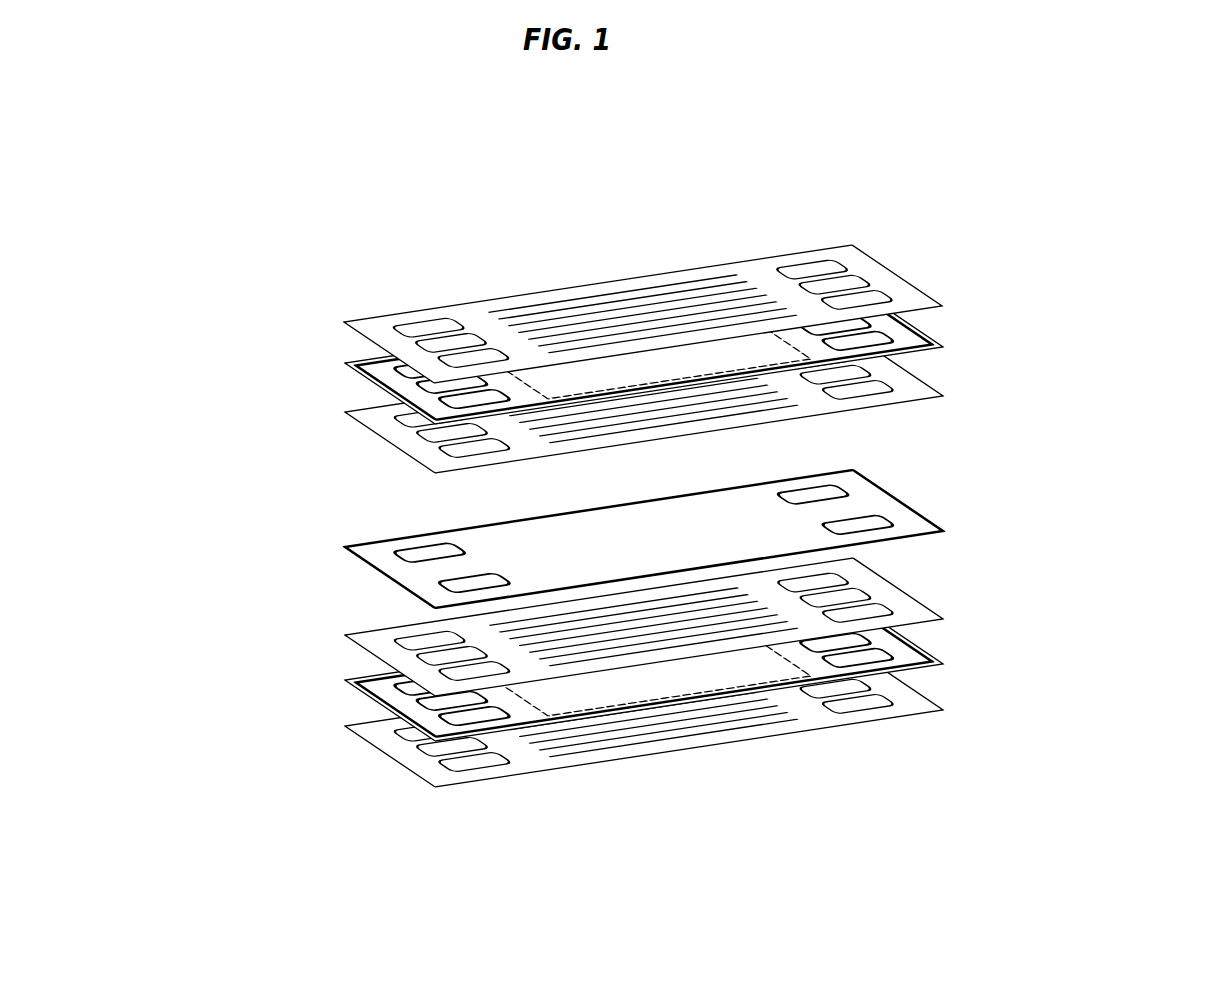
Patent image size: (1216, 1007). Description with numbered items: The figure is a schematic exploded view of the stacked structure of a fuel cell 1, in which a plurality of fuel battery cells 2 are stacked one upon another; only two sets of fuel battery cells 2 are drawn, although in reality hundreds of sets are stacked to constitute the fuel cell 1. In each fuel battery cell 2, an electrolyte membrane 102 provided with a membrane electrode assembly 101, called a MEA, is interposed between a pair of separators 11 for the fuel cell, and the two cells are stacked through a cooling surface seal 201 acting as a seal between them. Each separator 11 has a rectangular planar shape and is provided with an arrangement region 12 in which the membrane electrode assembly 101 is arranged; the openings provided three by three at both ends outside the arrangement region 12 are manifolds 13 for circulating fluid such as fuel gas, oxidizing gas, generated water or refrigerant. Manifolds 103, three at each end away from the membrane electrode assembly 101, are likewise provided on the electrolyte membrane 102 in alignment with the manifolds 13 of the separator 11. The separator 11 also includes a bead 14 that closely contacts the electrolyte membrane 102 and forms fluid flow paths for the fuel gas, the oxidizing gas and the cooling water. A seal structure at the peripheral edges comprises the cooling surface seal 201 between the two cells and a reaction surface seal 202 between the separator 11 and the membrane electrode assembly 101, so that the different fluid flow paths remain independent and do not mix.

The fuel cell 1 is at (1116, 183).
The fuel battery cell 2 is at (296, 267).
The separator 11 is at (746, 260).
The arrangement region 12 is at (670, 628).
The manifold 13 is at (473, 347).
The bead 14 is at (510, 612).
The membrane electrode assembly 101 is at (663, 362).
The electrolyte membrane 102 is at (878, 378).
The manifold 103 is at (437, 400).
The cooling surface seal 201 is at (860, 483).
The reaction surface seal 202 is at (858, 318).